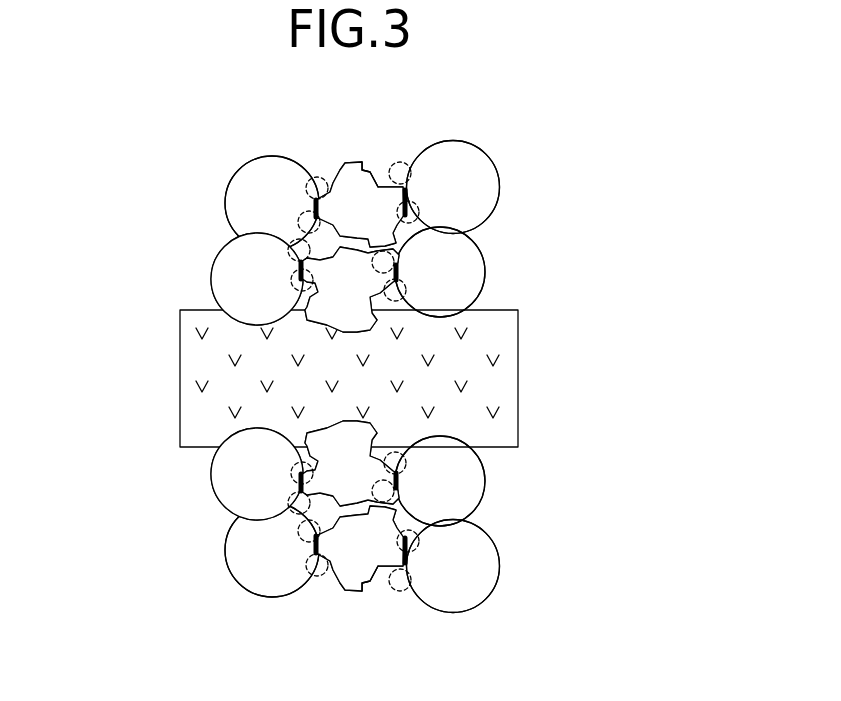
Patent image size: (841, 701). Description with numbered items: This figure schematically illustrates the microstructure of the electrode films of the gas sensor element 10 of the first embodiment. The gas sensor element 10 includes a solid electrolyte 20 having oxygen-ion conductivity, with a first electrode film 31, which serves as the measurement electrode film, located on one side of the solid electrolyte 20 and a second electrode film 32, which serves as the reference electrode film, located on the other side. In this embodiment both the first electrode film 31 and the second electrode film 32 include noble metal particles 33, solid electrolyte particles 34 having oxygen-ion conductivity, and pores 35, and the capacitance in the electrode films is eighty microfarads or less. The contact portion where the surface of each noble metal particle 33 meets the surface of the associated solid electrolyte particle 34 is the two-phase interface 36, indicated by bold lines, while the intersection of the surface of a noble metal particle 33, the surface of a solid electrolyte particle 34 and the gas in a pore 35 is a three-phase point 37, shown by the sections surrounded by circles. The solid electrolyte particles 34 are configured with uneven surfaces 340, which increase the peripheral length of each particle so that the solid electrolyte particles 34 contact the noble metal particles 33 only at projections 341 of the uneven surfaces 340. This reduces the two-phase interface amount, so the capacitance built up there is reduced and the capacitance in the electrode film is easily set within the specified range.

The gas sensor element 10 is at (339, 384).
The solid electrolyte 20 is at (497, 386).
The first electrode film 31 is at (515, 248).
The second electrode film 32 is at (515, 513).
The noble metal particle 33 is at (458, 168).
The solid electrolyte particle 34 is at (358, 162).
The uneven surface 340 is at (374, 161).
The projection 341 is at (321, 214).
The pore 35 is at (300, 250).
The two-phase interface 36 is at (408, 190).
The three-phase point 37 is at (402, 180).